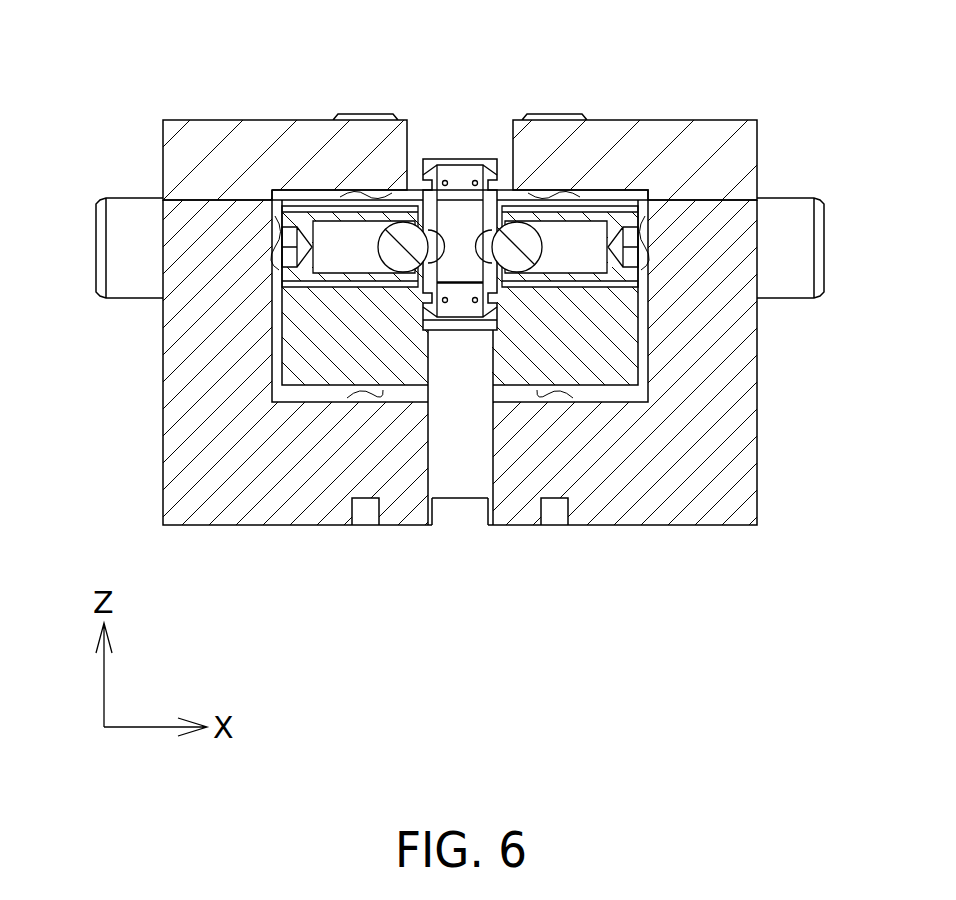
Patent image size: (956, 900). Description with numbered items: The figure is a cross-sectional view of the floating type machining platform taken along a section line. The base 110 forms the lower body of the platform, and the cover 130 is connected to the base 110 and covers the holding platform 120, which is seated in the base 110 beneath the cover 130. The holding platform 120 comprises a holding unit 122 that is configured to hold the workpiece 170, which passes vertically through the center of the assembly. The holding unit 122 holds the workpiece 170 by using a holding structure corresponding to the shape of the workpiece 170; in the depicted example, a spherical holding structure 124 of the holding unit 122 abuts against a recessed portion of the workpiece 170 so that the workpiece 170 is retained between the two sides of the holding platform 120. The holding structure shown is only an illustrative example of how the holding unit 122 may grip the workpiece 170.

The base 110 is at (735, 433).
The holding platform 120 is at (630, 360).
The holding unit 122 is at (348, 252).
The spherical holding structure 124 is at (412, 258).
The cover 130 is at (706, 135).
The workpiece 170 is at (428, 167).